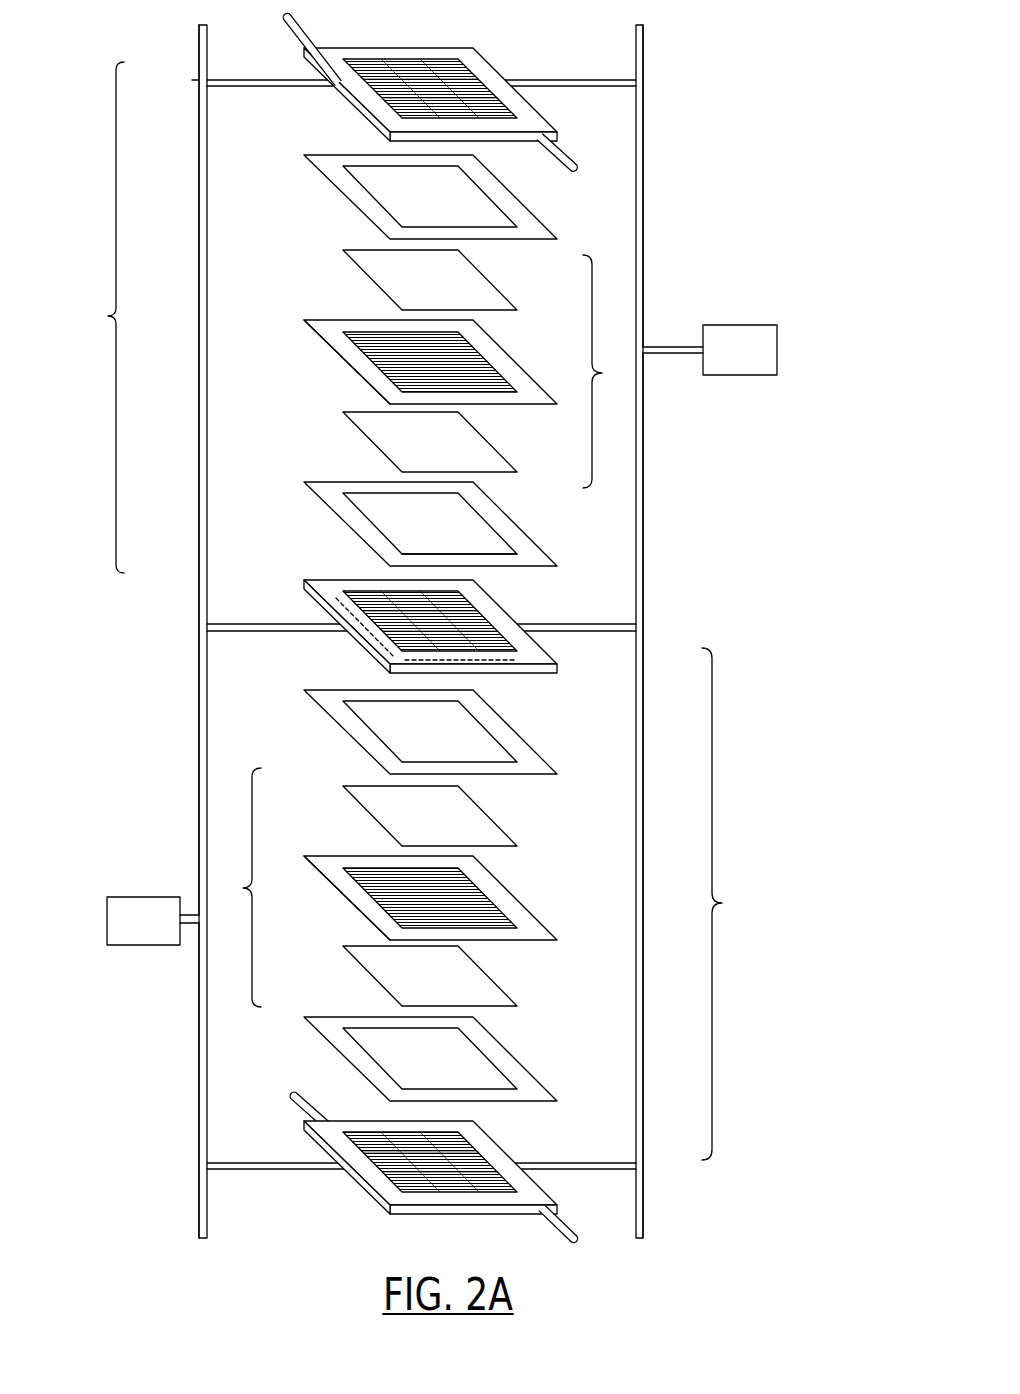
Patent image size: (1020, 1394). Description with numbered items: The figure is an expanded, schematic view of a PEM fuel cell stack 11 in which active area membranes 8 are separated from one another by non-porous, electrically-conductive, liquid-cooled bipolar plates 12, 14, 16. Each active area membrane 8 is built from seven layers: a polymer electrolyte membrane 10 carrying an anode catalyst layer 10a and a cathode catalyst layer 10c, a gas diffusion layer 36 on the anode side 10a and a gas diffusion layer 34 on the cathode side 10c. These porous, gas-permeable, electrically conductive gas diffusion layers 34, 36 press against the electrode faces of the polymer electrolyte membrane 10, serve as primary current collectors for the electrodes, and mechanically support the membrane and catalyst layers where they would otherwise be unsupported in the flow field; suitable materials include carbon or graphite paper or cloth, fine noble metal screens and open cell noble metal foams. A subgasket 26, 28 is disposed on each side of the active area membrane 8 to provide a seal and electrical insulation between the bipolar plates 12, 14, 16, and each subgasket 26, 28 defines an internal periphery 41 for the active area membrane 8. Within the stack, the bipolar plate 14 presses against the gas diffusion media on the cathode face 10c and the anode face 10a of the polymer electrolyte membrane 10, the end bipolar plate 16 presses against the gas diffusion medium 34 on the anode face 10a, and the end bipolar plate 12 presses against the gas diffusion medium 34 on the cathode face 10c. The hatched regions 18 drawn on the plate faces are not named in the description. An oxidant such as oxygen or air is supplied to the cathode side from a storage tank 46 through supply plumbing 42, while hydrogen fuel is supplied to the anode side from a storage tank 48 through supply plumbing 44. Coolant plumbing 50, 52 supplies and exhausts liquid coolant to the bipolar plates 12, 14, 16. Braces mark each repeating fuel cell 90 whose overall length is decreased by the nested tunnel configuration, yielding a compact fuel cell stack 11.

The active area membrane 8 is at (421, 631).
The polymer electrolyte membrane 10 is at (421, 630).
The anode catalyst layer 10a is at (348, 367).
The cathode catalyst layer 10c is at (488, 377).
The fuel cell stack 11 is at (723, 665).
The bipolar plate 12 is at (315, 70).
The bipolar plate 14 is at (300, 588).
The bipolar plate 16 is at (502, 1152).
The flow field 18 is at (403, 82).
The subgasket 26 is at (355, 193).
The subgasket 28 is at (343, 519).
The gas diffusion layer 34 is at (365, 258).
The gas diffusion layer 36 is at (372, 422).
The internal periphery 41 is at (482, 552).
The supply plumbing 42 is at (643, 437).
The supply plumbing 44 is at (199, 1020).
The storage tank 46 is at (757, 325).
The storage tank 48 is at (127, 897).
The coolant plumbing 50 is at (287, 1095).
The coolant plumbing 52 is at (560, 147).
The fuel cell 90 is at (417, 611).